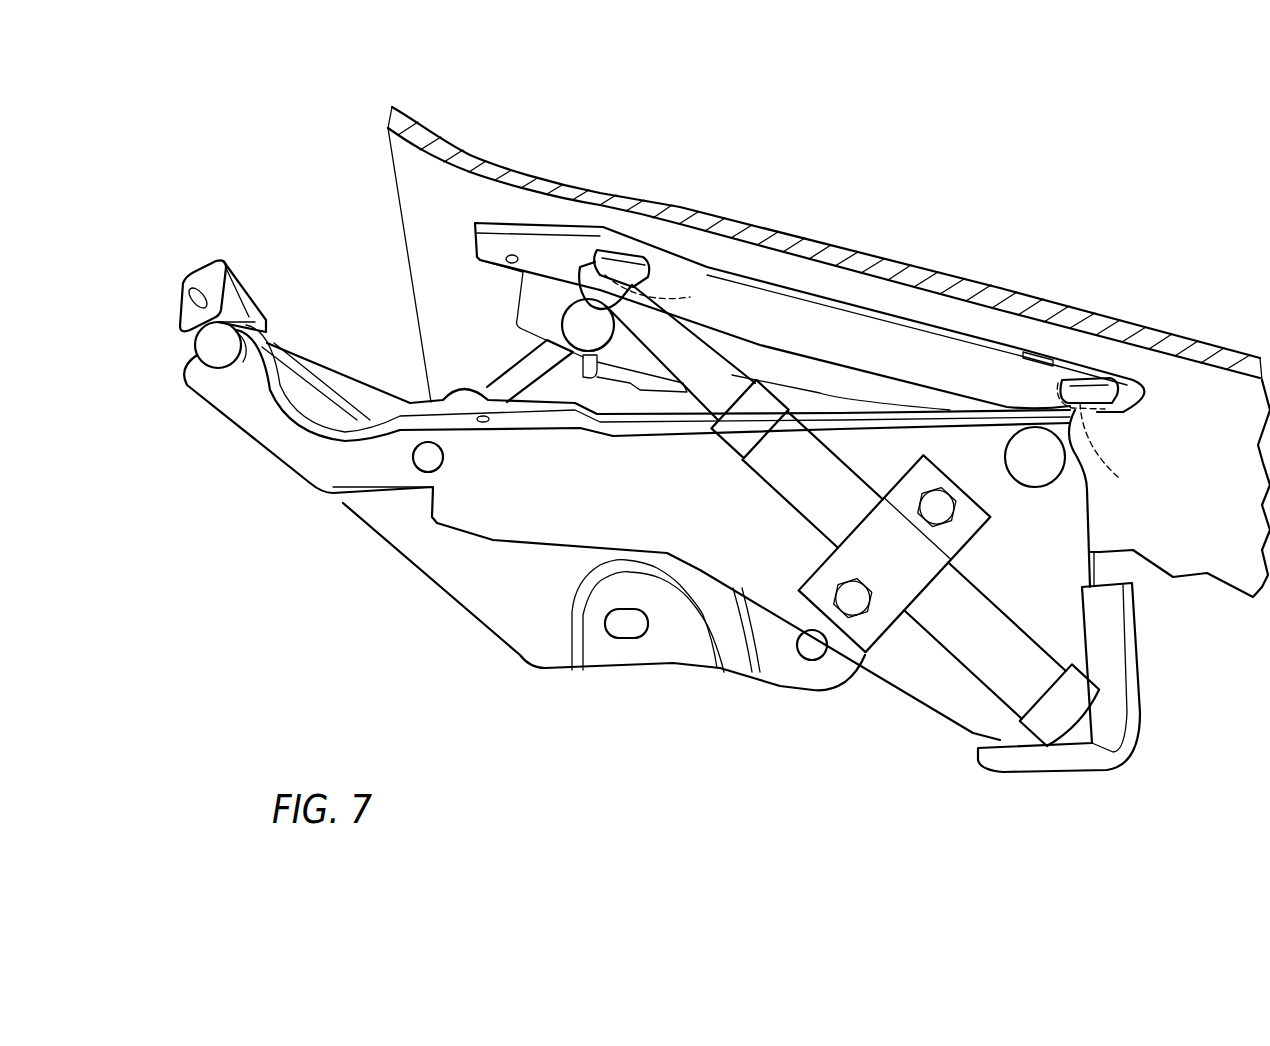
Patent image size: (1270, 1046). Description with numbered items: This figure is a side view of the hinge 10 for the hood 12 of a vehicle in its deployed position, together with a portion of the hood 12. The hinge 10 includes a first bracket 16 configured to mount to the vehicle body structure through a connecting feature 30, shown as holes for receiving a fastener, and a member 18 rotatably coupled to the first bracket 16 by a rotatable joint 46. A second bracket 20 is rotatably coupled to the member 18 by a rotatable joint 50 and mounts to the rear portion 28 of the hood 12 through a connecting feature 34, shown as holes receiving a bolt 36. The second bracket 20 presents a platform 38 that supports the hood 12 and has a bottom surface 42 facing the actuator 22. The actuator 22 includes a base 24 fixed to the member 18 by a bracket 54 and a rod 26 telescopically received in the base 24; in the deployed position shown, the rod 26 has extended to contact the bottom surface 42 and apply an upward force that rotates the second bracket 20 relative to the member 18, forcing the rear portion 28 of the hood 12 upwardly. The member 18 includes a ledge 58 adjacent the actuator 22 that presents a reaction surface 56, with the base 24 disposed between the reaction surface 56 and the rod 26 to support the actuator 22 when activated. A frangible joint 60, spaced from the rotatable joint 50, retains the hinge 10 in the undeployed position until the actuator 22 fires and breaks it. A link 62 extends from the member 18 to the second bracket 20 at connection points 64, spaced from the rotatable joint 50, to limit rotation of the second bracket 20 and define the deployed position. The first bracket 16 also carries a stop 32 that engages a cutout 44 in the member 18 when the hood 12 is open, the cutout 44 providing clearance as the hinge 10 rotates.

The hinge 10 is at (437, 673).
The hood 12 is at (740, 225).
The first bracket 16 is at (480, 592).
The member 18 is at (630, 514).
The second bracket 20 is at (958, 372).
The actuator 22 is at (905, 630).
The base 24 is at (973, 628).
The rod 26 is at (705, 360).
The rear portion 28 is at (683, 183).
The connecting feature 30 is at (812, 650).
The stop 32 is at (240, 287).
The connecting feature 34 is at (625, 252).
The bolt 36 is at (876, 384).
The platform 38 is at (923, 327).
The bottom surface 42 is at (862, 355).
The cutout 44 is at (310, 408).
The rotatable joint 46 is at (212, 350).
The rotatable joint 50 is at (1040, 465).
The bracket 54 is at (905, 571).
The reaction surface 56 is at (1108, 740).
The ledge 58 is at (1130, 652).
The frangible joint 60 is at (510, 264).
The link 62 is at (492, 392).
The connection points 64 is at (578, 325).